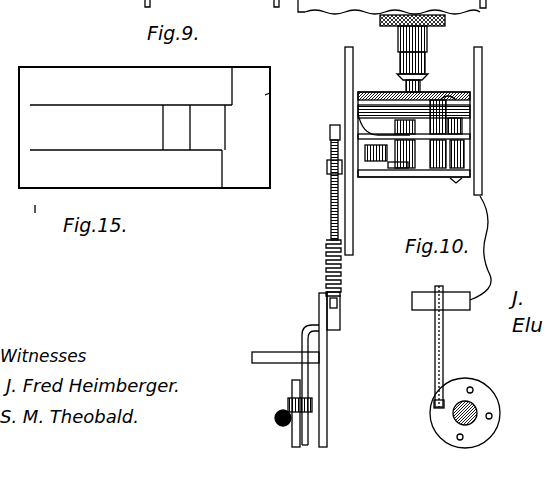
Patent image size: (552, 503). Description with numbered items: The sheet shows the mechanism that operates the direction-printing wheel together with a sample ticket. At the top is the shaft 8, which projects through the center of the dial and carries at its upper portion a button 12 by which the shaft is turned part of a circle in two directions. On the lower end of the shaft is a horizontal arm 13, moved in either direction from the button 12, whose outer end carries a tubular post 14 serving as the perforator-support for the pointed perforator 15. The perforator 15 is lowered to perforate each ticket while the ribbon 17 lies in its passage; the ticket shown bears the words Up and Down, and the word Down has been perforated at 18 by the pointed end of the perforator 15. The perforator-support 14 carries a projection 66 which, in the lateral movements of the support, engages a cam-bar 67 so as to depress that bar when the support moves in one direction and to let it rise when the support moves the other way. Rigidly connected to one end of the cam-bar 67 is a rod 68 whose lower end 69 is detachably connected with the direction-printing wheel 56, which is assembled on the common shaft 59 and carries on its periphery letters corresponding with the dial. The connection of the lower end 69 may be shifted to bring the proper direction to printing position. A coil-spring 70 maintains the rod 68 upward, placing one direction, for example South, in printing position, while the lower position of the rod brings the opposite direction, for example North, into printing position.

In FIG. 10, the shaft 8 is at (423, 88).
In FIG. 10, the button 12 is at (446, 26).
In FIG. 10, the horizontal arm 13 is at (434, 166).
In FIG. 10, the tubular post 14 is at (465, 118).
In FIG. 10, the perforator 15 is at (456, 100).
In FIG. 15, the ribbon 17 is at (72, 64).
In FIG. 15, the perforation 18 is at (270, 92).
In FIG. 10, the direction-printing wheel 56 is at (478, 380).
In FIG. 10, the common shaft 59 is at (455, 413).
In FIG. 10, the projection 66 is at (467, 128).
In FIG. 10, the cam-bar 67 is at (358, 113).
In FIG. 10, the rod 68 is at (329, 193).
In FIG. 10, the lower end of rod 69 is at (302, 342).
In FIG. 10, the coil-spring 70 is at (341, 280).